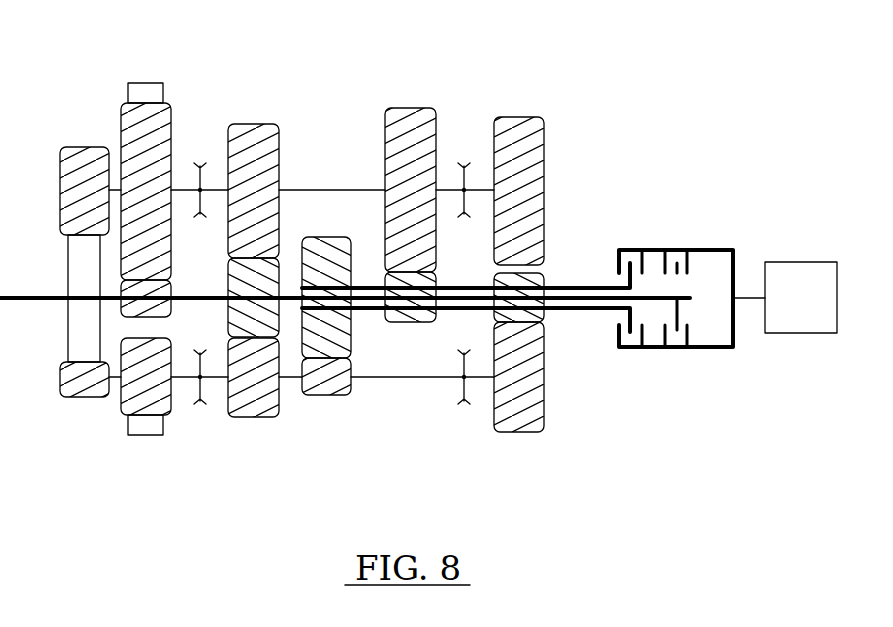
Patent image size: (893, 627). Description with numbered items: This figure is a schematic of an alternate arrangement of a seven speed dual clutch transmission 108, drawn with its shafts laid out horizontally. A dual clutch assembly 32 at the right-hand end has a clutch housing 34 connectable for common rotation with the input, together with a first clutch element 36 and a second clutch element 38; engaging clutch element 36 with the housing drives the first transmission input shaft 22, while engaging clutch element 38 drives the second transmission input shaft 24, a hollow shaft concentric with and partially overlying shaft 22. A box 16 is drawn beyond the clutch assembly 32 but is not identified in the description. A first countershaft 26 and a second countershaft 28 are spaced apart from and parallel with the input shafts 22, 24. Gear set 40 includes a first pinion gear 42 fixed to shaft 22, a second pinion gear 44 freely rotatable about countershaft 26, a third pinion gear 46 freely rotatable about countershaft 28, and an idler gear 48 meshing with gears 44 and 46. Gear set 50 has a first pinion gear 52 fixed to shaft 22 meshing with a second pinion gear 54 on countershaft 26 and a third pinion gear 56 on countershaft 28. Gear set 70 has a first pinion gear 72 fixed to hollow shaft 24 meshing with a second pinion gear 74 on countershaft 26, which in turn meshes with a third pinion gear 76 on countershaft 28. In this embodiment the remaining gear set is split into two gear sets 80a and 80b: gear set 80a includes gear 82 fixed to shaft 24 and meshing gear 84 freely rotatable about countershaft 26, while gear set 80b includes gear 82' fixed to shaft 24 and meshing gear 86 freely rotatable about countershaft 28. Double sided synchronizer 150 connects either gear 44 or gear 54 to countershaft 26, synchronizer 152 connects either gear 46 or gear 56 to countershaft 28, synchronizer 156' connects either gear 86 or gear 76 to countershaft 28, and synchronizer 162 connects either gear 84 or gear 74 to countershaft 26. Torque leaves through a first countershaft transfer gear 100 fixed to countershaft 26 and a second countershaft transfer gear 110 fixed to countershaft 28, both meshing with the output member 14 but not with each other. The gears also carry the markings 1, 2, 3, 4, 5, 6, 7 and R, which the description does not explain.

The seven speed dual clutch transmission 108 is at (720, 108).
The output member 14 is at (70, 309).
The output 16 is at (788, 309).
The first transmission input shaft 22 is at (198, 296).
The second transmission input shaft 24 is at (587, 284).
The first countershaft 26 is at (405, 378).
The second countershaft 28 is at (324, 189).
The dual clutch assembly 32 is at (676, 289).
The clutch housing 34 is at (655, 249).
The first clutch element 36 is at (688, 334).
The second clutch element 38 is at (643, 334).
The co-planar gear set 40 is at (146, 269).
The first pinion gear 42 is at (133, 309).
The second pinion gear 44 is at (133, 370).
The third pinion gear 46 is at (133, 152).
The idler gear 48 is at (146, 83).
The co-planar gear set 50 is at (250, 322).
The first pinion gear 52 is at (240, 287).
The second pinion gear 54 is at (240, 369).
The third pinion gear 56 is at (240, 157).
The co-planar gear set 70 is at (536, 289).
The first pinion gear 72 is at (494, 281).
The second pinion gear 74 is at (544, 408).
The third pinion gear 76 is at (520, 117).
The gear set 80a is at (335, 359).
The gear set 80b is at (379, 199).
The gear 82 is at (339, 278).
The gear 82' is at (400, 320).
The gear 84 is at (323, 396).
The gear 86 is at (385, 128).
The first countershaft transfer gear 100 is at (66, 391).
The second countershaft transfer gear 110 is at (66, 201).
The synchronizer 150 is at (200, 404).
The synchronizer 152 is at (200, 163).
The synchronizer 156' is at (462, 151).
The synchronizer 162 is at (464, 404).
The first gear 1 is at (139, 202).
The second gear 2 is at (512, 389).
The third gear 3 is at (139, 406).
The fourth gear 4 is at (403, 202).
The fifth gear 5 is at (246, 202).
The sixth gear 6 is at (319, 388).
The seventh gear 7 is at (246, 406).
The reverse gear R is at (510, 202).